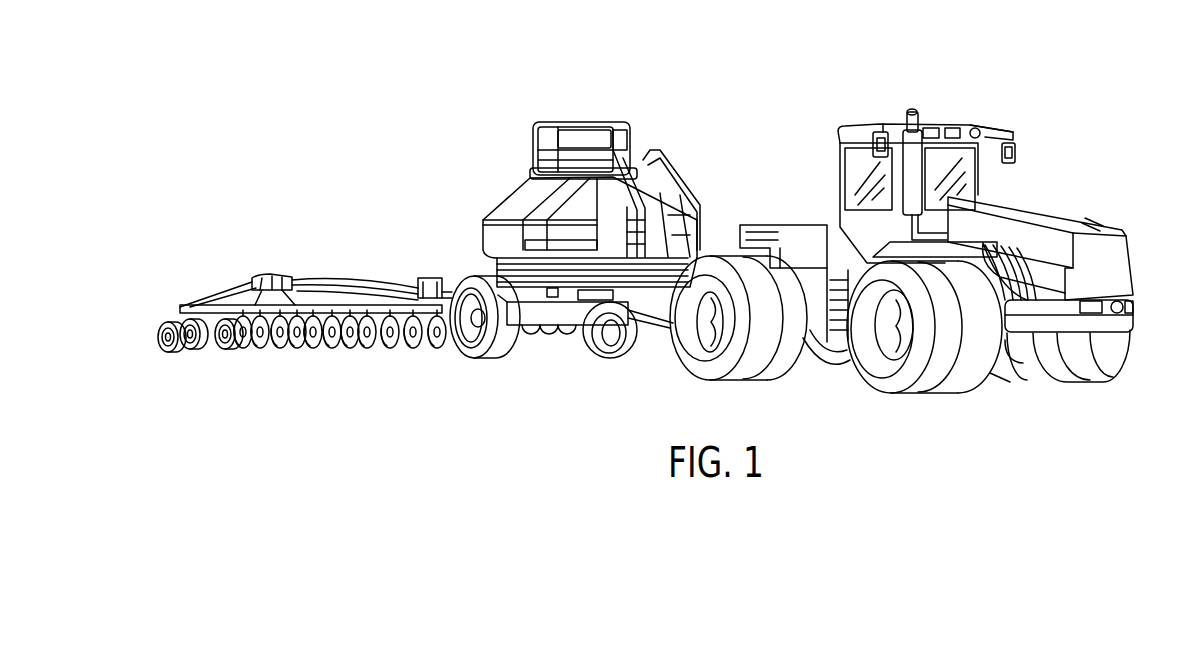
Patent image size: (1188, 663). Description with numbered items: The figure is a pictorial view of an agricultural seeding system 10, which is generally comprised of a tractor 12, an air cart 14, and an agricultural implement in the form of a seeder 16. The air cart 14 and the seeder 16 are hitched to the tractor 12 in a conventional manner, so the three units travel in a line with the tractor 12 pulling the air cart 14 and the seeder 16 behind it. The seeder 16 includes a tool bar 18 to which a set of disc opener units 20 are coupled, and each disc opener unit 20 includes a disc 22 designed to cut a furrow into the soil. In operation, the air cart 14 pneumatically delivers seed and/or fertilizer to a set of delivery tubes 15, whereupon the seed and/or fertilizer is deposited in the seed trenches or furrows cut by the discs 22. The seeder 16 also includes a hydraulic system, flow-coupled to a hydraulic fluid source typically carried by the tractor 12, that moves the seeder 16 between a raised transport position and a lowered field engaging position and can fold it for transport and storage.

The agricultural seeding system 10 is at (1090, 39).
The tractor 12 is at (1088, 208).
The air cart 14 is at (636, 115).
The delivery tubes 15 is at (310, 290).
The seeder 16 is at (250, 269).
The tool bar 18 is at (355, 296).
The disc opener units 20 is at (430, 350).
The disc 22 is at (280, 350).